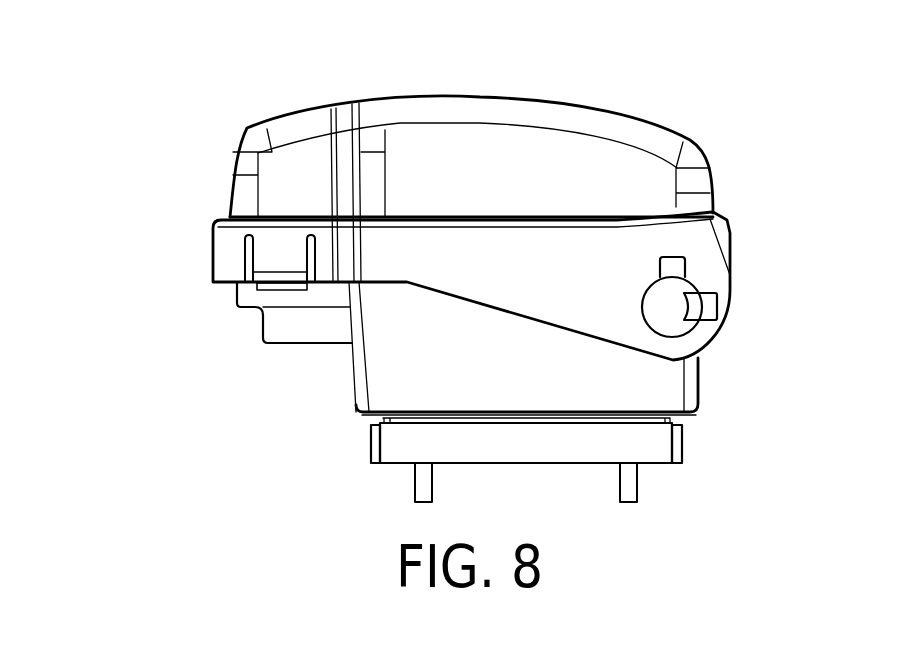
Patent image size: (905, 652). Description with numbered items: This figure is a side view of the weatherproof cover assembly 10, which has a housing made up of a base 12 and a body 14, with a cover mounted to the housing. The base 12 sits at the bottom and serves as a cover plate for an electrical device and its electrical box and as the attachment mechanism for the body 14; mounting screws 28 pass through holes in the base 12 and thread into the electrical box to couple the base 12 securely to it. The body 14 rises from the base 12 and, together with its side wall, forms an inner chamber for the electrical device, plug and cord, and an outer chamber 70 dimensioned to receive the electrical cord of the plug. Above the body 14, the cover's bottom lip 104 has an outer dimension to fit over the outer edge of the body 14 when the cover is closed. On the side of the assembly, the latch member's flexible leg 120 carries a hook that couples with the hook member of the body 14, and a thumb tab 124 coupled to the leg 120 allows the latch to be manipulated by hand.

The weatherproof cover assembly 10 is at (143, 298).
The base 12 is at (684, 447).
The body 14 is at (700, 383).
The mounting screws 28 is at (414, 482).
The outer chamber 70 is at (247, 330).
The bottom lip 104 is at (250, 128).
The flexible leg 120 is at (270, 257).
The thumb tab 124 is at (293, 291).